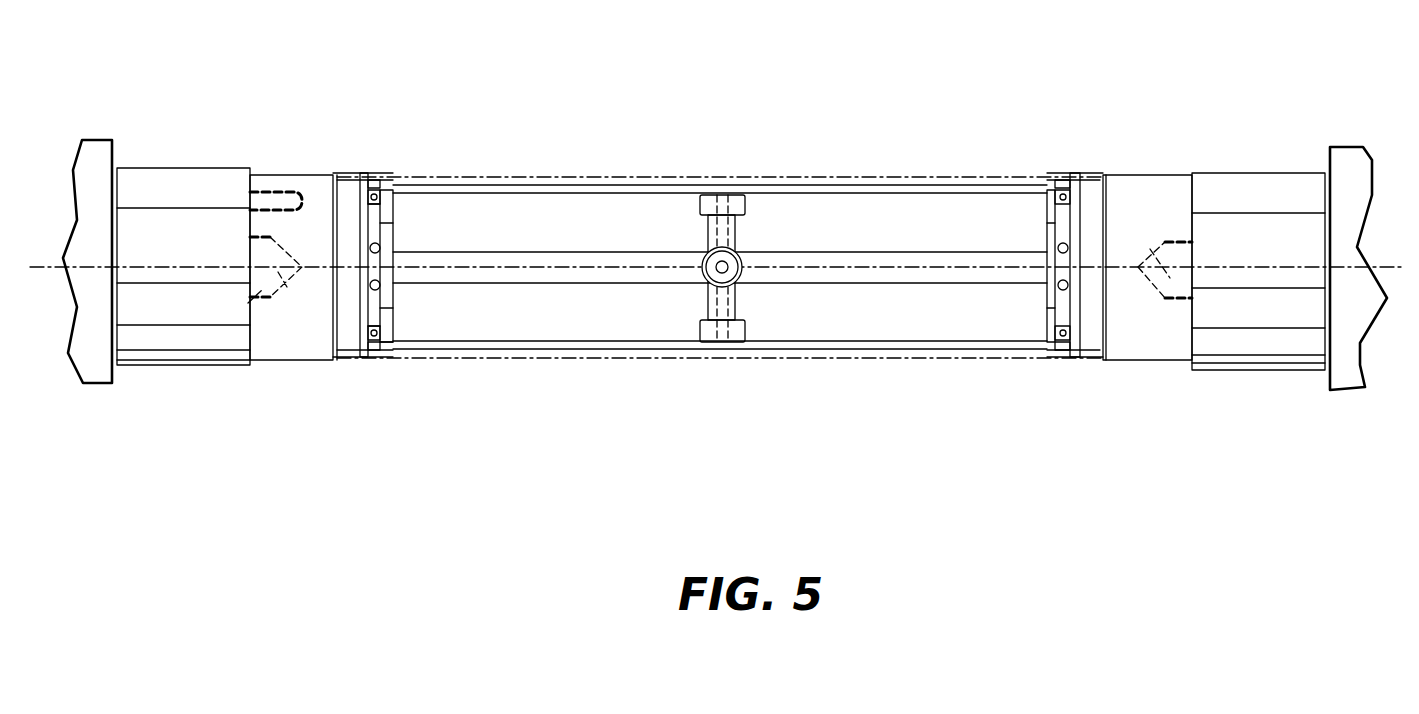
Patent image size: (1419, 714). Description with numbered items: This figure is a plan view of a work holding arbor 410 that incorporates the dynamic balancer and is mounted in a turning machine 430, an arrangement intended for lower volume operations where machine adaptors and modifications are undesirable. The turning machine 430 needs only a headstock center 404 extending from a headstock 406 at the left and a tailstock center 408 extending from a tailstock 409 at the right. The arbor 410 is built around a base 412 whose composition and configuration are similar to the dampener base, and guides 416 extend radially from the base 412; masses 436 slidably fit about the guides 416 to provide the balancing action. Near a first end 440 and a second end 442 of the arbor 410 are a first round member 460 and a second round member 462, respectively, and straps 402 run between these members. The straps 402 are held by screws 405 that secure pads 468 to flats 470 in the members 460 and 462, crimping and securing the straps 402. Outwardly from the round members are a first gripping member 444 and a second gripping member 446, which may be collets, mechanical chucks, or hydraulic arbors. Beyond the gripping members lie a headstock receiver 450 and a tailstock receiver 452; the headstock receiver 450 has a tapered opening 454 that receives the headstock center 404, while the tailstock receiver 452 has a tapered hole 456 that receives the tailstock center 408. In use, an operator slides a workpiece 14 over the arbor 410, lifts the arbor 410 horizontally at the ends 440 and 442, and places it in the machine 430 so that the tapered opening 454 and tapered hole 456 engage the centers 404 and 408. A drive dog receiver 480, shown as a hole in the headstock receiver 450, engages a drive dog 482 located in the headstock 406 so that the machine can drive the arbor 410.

The workpiece 14 is at (582, 177).
The straps 402 is at (895, 190).
The headstock center 404 is at (248, 303).
The screws 405 is at (376, 360).
The headstock 406 is at (152, 367).
The tailstock center 408 is at (1145, 255).
The tailstock 409 is at (1273, 370).
The arbor 410 is at (1168, 506).
The base 412 is at (880, 285).
The guides 416 is at (735, 235).
The turning machine 430 is at (95, 150).
The masses 436 is at (735, 222).
The first end 440 is at (380, 268).
The second end 442 is at (1096, 274).
The first gripping member 444 is at (348, 177).
The second gripping member 446 is at (1095, 193).
The headstock receiver 450 is at (290, 293).
The tailstock receiver 452 is at (1153, 298).
The tapered opening 454 is at (285, 262).
The tapered hole 456 is at (1148, 245).
The first round member 460 is at (393, 210).
The second round member 462 is at (1045, 215).
The pads 468 is at (366, 180).
The flats 470 is at (388, 297).
The drive dog receiver 480 is at (297, 200).
The drive dog 482 is at (250, 207).